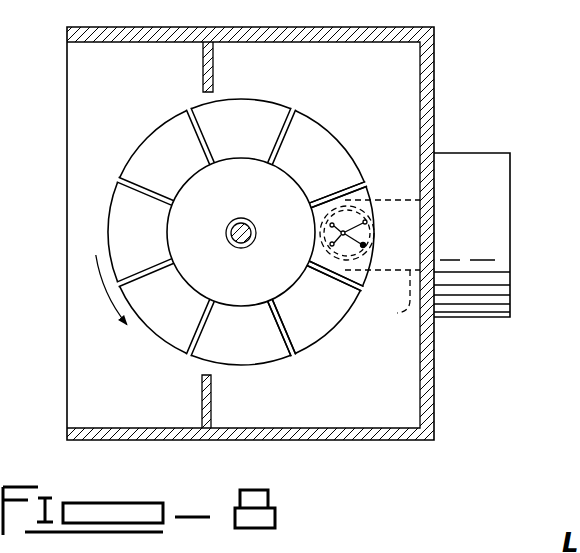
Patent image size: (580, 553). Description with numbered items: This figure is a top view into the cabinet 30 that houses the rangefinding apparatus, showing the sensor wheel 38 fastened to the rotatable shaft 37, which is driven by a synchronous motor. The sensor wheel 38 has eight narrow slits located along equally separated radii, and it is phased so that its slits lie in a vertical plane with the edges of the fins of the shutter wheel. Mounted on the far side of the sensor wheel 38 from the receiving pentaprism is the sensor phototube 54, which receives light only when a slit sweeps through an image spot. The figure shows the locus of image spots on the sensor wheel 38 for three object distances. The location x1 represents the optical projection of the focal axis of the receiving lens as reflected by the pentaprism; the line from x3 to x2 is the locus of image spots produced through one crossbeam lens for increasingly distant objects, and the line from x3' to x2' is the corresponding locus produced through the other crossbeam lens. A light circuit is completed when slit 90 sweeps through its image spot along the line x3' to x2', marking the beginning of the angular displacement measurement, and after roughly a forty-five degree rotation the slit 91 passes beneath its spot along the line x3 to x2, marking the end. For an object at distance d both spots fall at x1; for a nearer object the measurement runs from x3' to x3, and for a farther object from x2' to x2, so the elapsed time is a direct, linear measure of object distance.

The cabinet 30 is at (427, 74).
The sensor wheel 38 is at (326, 153).
The rotatable shaft 37 is at (237, 218).
The slit 90 is at (346, 284).
The slit 91 is at (281, 338).
The sensor phototube 54 is at (370, 264).
The location x1 is at (340, 234).
The location x2 is at (304, 224).
The location x2' is at (307, 256).
The location x3 is at (374, 246).
The location x3' is at (378, 220).